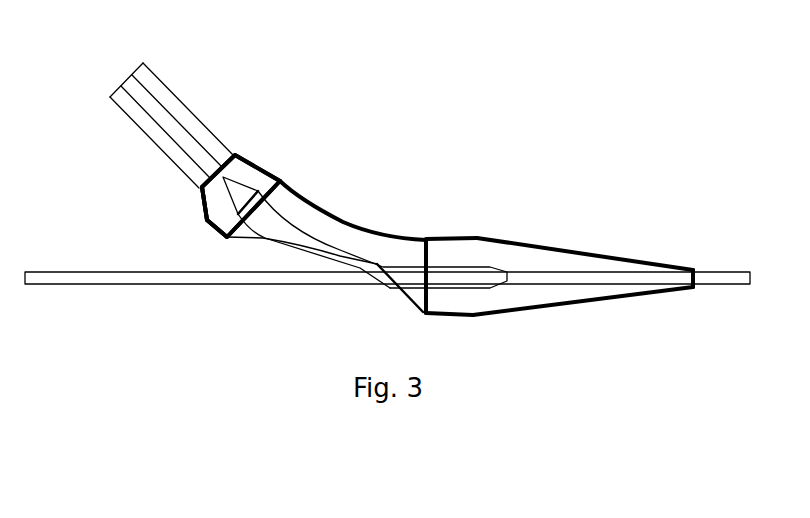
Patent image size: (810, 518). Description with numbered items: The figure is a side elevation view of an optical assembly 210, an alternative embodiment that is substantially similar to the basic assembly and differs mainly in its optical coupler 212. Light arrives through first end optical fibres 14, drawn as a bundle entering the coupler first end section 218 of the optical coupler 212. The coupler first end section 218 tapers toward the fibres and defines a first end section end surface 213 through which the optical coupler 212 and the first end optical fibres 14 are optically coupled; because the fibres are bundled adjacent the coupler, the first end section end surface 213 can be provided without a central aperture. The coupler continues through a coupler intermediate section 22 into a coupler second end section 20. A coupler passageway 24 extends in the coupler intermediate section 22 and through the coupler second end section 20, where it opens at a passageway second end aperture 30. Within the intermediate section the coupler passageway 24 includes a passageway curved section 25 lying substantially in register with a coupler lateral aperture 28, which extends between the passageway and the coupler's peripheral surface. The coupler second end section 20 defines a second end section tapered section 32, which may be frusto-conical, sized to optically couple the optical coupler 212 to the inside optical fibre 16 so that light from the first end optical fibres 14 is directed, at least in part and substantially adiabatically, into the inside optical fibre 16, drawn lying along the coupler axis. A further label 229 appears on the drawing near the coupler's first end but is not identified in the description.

The first end optical fibre 14 is at (112, 96).
The inside optical fibre 16 is at (82, 284).
The coupler second end section 20 is at (432, 222).
The coupler intermediate section 22 is at (288, 178).
The coupler passageway 24 is at (385, 265).
The passageway curved section 25 is at (372, 239).
The coupler lateral aperture 28 is at (423, 312).
The passageway second end aperture 30 is at (698, 290).
The second end section tapered section 32 is at (717, 162).
The optical assembly 210 is at (227, 407).
The optical coupler 212 is at (242, 259).
The first end section end surface 213 is at (200, 183).
The coupler first end section 218 is at (240, 144).
The corner 229 is at (208, 232).